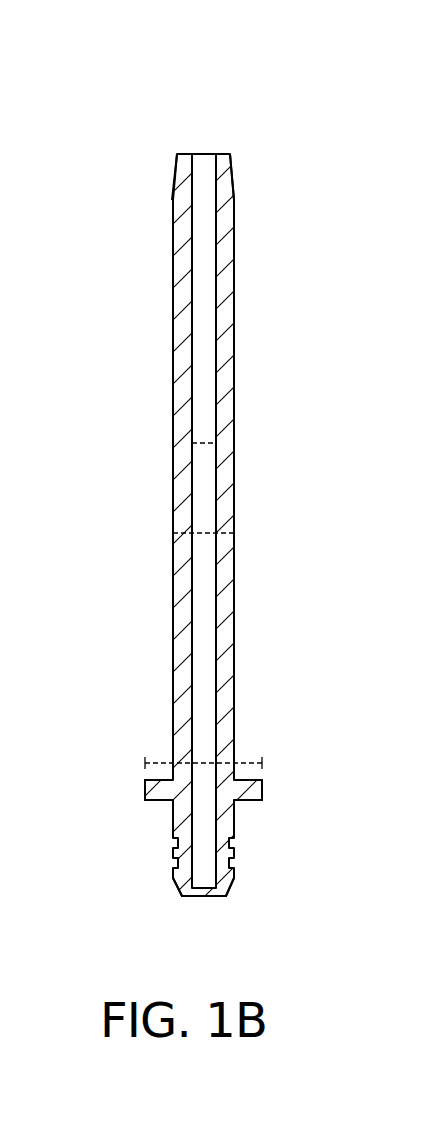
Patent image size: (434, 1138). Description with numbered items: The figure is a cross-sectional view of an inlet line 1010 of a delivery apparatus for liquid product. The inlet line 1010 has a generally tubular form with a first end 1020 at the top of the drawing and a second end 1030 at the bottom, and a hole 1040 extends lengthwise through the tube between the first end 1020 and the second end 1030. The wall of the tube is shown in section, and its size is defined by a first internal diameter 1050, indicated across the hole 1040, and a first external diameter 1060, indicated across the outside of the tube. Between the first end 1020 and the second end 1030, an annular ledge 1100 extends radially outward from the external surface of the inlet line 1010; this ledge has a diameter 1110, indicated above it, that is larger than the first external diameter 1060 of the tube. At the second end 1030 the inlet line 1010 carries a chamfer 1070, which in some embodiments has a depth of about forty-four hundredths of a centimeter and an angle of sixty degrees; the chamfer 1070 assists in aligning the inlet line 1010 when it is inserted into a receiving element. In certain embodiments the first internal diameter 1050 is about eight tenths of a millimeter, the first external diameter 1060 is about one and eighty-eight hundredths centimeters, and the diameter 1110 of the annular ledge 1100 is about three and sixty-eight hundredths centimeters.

The inlet line 1010 is at (92, 90).
The first end 1020 is at (160, 181).
The second end 1030 is at (153, 912).
The hole 1040 is at (205, 238).
The first internal diameter 1050 is at (200, 448).
The first external diameter 1060 is at (200, 537).
The chamfer 1070 is at (230, 886).
The annular ledge 1100 is at (271, 787).
The diameter 1110 is at (240, 763).